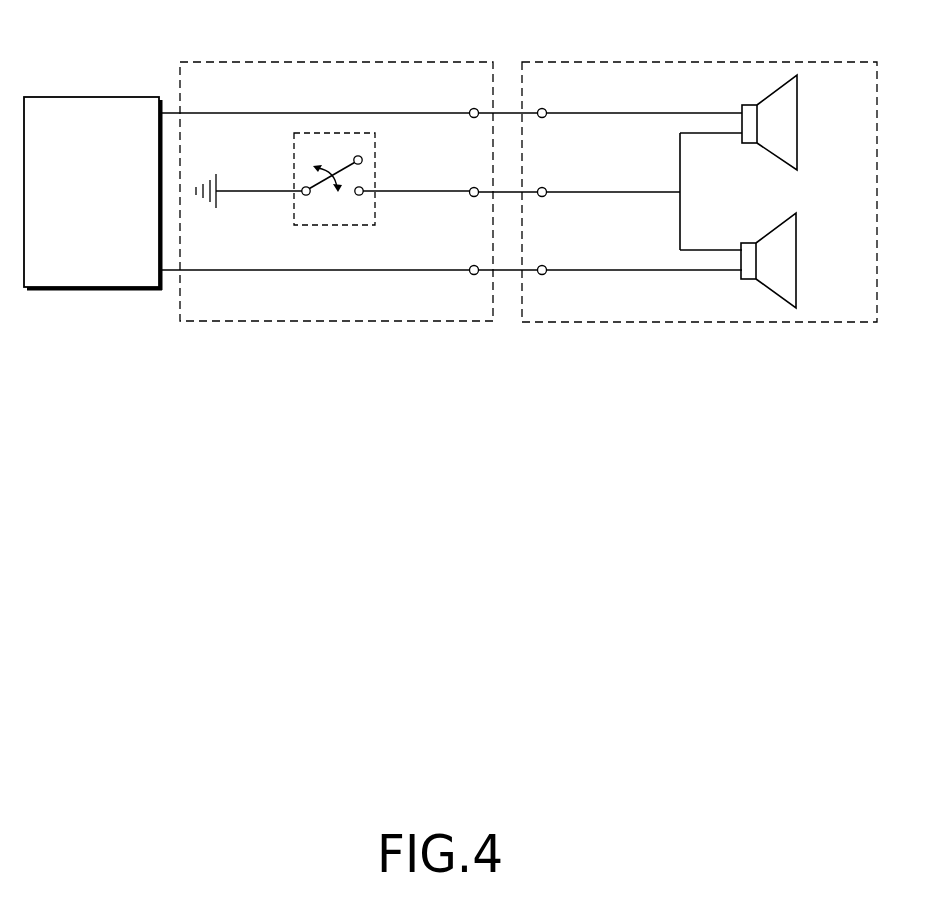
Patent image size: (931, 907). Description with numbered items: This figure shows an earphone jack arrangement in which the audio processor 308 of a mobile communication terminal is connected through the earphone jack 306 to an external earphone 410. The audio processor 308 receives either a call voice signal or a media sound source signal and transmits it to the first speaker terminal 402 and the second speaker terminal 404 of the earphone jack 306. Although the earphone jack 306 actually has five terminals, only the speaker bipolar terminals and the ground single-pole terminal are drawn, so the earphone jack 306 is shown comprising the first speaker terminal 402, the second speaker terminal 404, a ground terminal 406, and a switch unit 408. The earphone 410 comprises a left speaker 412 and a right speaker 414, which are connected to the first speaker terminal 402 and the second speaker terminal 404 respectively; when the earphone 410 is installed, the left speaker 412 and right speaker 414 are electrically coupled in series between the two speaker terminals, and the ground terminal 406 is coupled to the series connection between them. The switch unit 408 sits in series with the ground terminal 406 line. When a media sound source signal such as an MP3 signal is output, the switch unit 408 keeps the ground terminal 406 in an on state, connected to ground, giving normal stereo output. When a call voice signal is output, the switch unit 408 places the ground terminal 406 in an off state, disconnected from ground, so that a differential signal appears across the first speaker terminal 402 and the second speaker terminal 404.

The audio processor 308 is at (92, 97).
The earphone jack 306 is at (310, 62).
The first speaker terminal 402 is at (436, 113).
The second speaker terminal 404 is at (310, 270).
The ground terminal 406 is at (472, 197).
The switch unit 408 is at (294, 203).
The earphone 410 is at (701, 62).
The left speaker 412 is at (797, 122).
The right speaker 414 is at (796, 260).